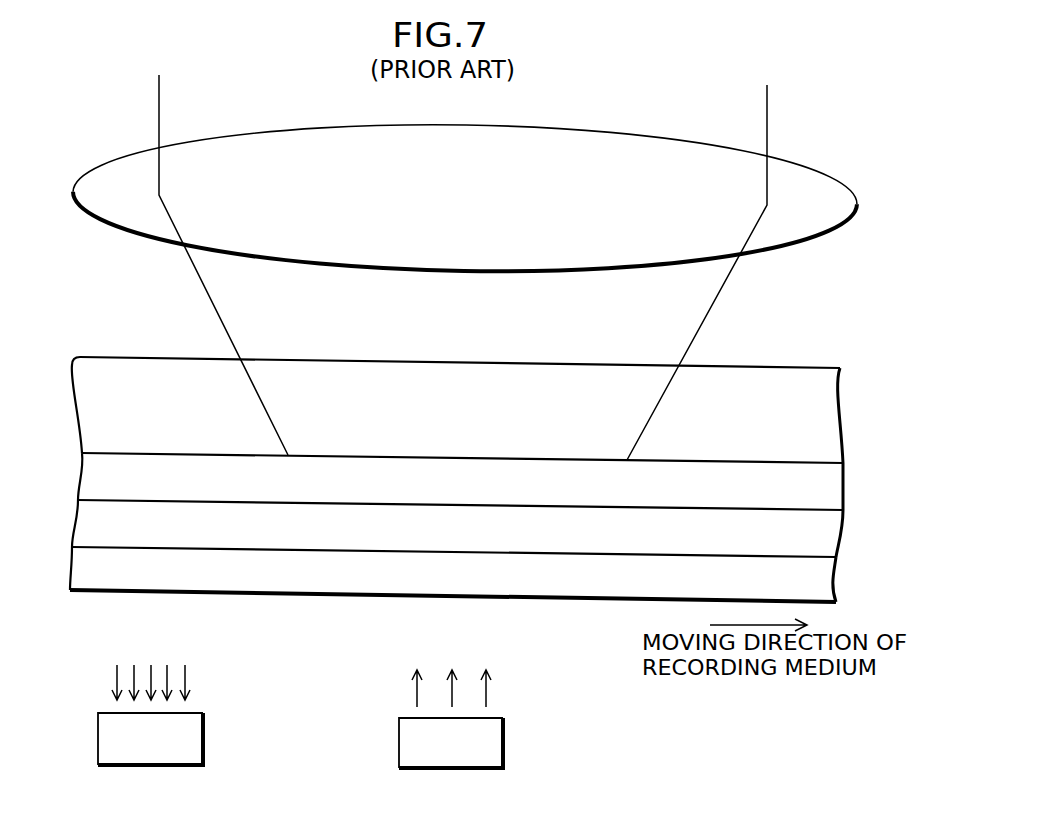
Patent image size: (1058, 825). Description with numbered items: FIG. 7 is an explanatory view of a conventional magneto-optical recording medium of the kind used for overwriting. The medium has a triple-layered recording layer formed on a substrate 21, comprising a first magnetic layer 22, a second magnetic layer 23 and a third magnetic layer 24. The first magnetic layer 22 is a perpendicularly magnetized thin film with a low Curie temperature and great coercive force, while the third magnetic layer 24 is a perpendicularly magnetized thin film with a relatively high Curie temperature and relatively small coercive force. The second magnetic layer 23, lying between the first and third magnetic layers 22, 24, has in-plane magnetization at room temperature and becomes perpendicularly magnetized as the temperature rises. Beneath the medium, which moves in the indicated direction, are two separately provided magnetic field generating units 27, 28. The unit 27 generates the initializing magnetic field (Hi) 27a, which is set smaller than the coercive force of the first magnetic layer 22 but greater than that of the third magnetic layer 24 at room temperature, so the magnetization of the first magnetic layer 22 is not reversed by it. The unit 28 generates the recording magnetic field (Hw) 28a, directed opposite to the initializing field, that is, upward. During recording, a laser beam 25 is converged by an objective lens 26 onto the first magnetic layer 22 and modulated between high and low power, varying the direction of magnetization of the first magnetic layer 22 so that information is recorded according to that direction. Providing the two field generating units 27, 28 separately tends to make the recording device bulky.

The substrate 21 is at (822, 388).
The first magnetic layer 22 is at (830, 483).
The second magnetic layer 23 is at (823, 535).
The third magnetic layer 24 is at (818, 582).
The laser beam 25 is at (747, 118).
The objective lens 26 is at (818, 190).
The magnetic field generating unit 27 is at (203, 733).
The initializing magnetic field 27a is at (115, 682).
The magnetic field generating unit 28 is at (503, 737).
The recording magnetic field 28a is at (417, 692).